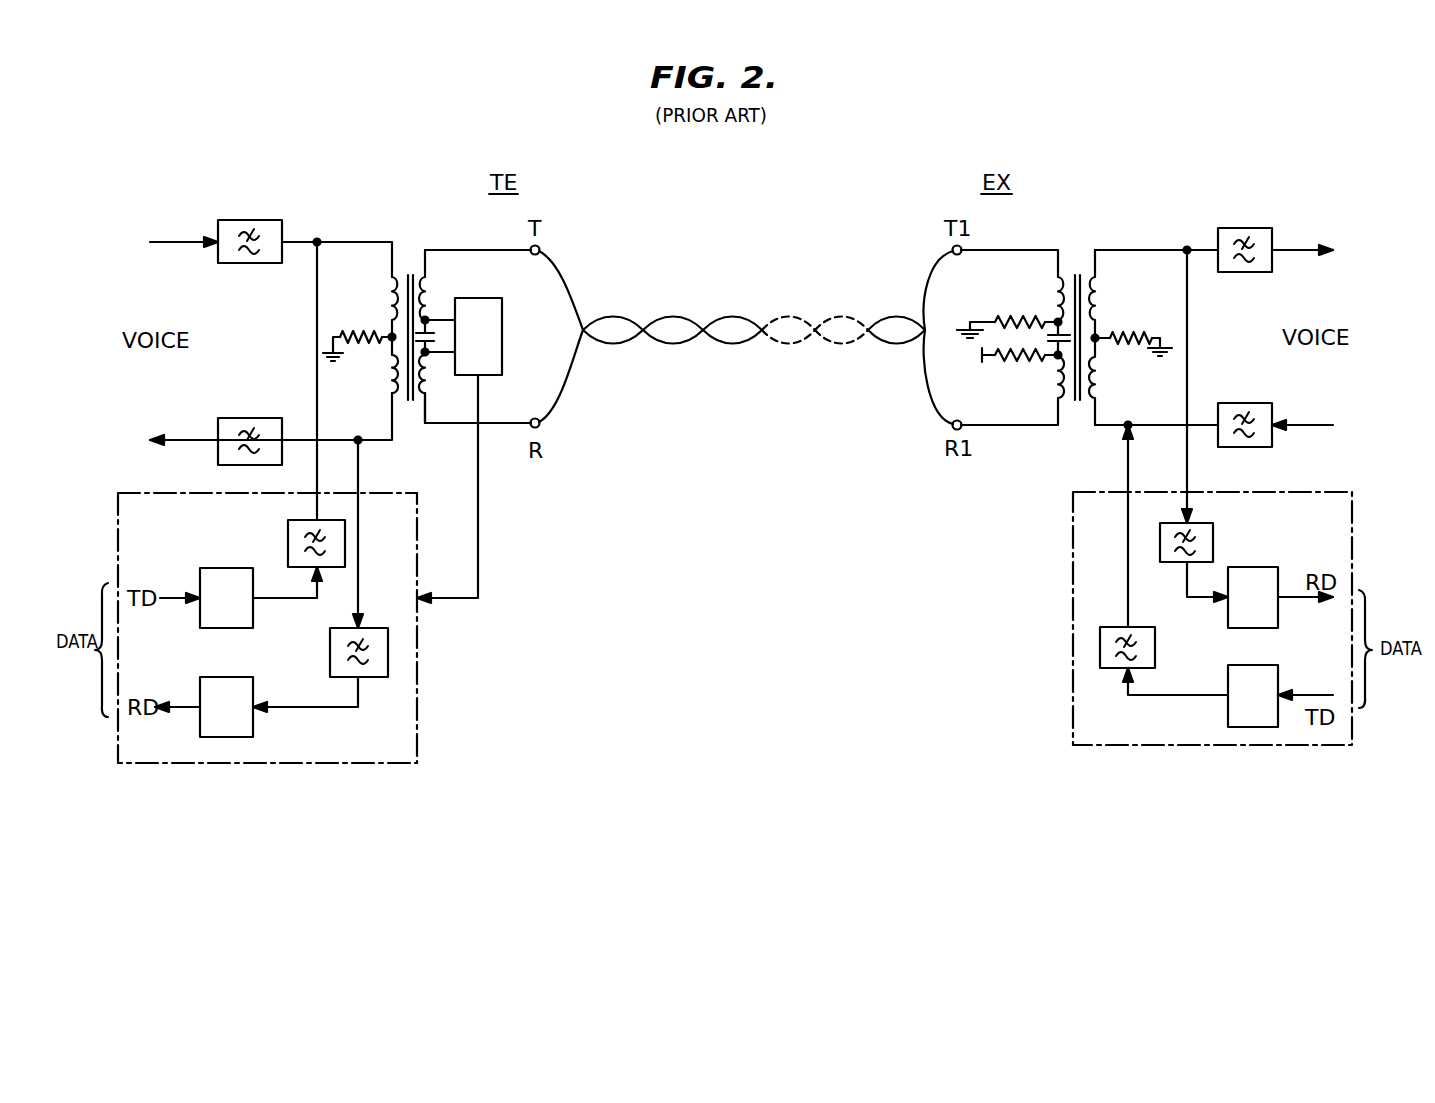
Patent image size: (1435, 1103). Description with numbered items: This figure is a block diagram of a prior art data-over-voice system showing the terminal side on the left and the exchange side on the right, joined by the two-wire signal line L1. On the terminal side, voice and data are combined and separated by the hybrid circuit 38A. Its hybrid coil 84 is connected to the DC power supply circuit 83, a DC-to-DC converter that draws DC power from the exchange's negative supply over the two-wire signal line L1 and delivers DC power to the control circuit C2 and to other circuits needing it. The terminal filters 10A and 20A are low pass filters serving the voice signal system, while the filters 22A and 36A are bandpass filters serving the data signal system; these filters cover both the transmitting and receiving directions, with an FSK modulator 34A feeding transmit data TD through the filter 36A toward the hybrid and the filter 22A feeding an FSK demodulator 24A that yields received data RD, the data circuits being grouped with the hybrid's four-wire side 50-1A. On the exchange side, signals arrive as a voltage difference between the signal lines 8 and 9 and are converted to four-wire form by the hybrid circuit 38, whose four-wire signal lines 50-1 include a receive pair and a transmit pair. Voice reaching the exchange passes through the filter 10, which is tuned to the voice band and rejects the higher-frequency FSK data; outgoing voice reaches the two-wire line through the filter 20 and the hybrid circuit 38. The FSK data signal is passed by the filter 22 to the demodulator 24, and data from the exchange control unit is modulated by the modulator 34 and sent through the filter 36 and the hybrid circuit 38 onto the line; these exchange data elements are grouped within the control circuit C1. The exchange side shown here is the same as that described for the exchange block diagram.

The filter 10A is at (244, 220).
The filter 20A is at (236, 418).
The terminal hybrid circuit 50-1A is at (337, 404).
The hybrid circuit 38A is at (430, 222).
The DC power supply circuit 83 is at (466, 298).
The hybrid coil 84 is at (435, 400).
The filter 36A is at (288, 540).
The FSK modulator 34A is at (240, 568).
The filter 22A is at (374, 628).
The FSK demodulator 24A is at (246, 677).
The control circuit C2 is at (417, 652).
The 2-wire signal line L1 is at (708, 326).
The signal line 8 is at (1010, 250).
The signal line 9 is at (1007, 425).
The hybrid circuit 38 is at (1091, 230).
The 4-wire signal lines 50-1 is at (1156, 422).
The filter 10 is at (1248, 228).
The filter 20 is at (1272, 406).
The exchange data circuit C1 is at (1073, 710).
The filter 22 is at (1213, 541).
The demodulator 24 is at (1268, 567).
The filter 36 is at (1104, 627).
The modulator 34 is at (1275, 665).